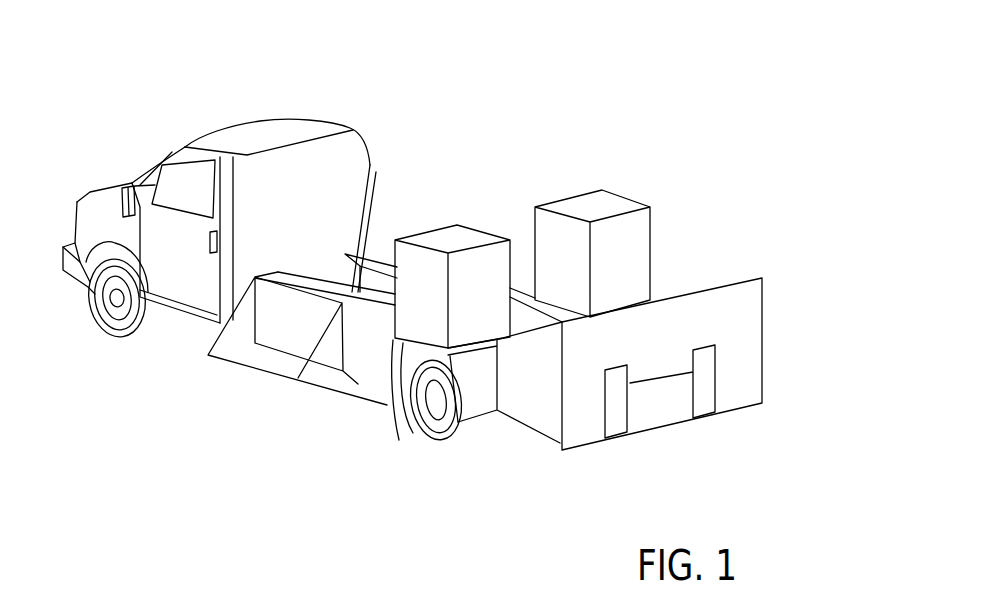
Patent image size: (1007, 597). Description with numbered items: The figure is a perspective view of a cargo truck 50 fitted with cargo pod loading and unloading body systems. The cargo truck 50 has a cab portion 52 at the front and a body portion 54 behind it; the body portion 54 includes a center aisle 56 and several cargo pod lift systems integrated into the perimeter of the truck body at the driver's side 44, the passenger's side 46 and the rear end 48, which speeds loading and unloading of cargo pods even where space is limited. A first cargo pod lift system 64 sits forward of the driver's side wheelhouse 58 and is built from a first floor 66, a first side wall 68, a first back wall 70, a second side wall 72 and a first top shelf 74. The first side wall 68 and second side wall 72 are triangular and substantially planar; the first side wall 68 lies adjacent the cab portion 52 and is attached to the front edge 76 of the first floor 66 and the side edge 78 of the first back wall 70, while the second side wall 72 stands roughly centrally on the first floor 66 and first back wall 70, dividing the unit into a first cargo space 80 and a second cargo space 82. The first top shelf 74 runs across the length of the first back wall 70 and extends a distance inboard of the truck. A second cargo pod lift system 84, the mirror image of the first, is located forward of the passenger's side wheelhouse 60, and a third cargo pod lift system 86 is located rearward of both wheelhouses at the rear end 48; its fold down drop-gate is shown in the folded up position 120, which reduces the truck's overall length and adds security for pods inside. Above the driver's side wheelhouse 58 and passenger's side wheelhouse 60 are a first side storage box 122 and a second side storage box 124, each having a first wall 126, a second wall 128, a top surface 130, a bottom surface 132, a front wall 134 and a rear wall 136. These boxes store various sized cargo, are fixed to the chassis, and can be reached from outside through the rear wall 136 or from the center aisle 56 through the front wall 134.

The driver's side 44 is at (219, 298).
The passenger's side 46 is at (667, 43).
The rear end 48 is at (722, 440).
The cargo truck 50 is at (219, 200).
The cab portion 52 is at (280, 130).
The body portion 54 is at (493, 212).
The center aisle 56 is at (372, 250).
The driver's side wheelhouse 58 is at (485, 388).
The passenger's side wheelhouse 60 is at (549, 323).
The first cargo pod lift system 64 is at (270, 378).
The first floor 66 is at (247, 367).
The first side wall 68 is at (212, 342).
The first back wall 70 is at (283, 307).
The second side wall 72 is at (327, 357).
The first top shelf 74 is at (303, 280).
The front edge 76 is at (242, 355).
The side edge 78 is at (258, 303).
The first cargo space 80 is at (277, 325).
The second cargo space 82 is at (355, 338).
The second cargo pod lift system 84 is at (383, 252).
The third cargo pod lift system 86 is at (535, 446).
The folded up position 120 is at (762, 340).
The first side storage box 122 is at (440, 222).
The second side storage box 124 is at (623, 192).
The first wall 126 is at (397, 283).
The second wall 128 is at (483, 307).
The top surface 130 is at (455, 238).
The bottom surface 132 is at (399, 405).
The front wall 134 is at (569, 252).
The rear wall 136 is at (430, 318).